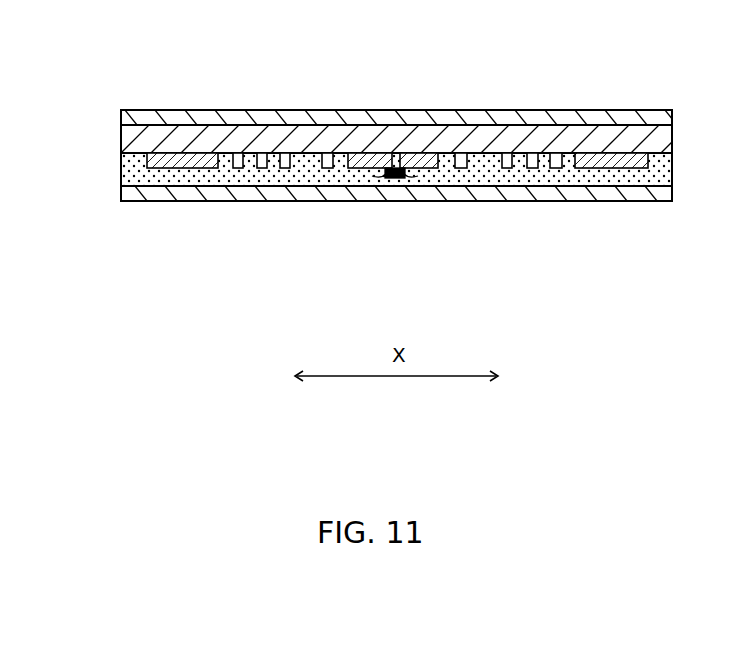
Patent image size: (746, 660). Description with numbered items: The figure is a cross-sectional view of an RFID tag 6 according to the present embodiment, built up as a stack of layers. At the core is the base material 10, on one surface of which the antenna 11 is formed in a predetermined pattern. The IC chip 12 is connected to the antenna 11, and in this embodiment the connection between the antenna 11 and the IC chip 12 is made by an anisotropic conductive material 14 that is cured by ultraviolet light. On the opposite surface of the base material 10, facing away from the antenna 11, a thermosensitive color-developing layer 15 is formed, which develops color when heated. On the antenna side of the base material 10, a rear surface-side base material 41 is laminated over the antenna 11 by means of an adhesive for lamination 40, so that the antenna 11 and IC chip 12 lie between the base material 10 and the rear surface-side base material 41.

The RFID tag 6 is at (352, 150).
The thermosensitive color-developing layer 15 is at (121, 118).
The base material 10 is at (128, 146).
The antenna 11 is at (127, 162).
The adhesive for lamination 40 is at (128, 185).
The rear surface-side base material 41 is at (128, 198).
The anisotropic conductive material 14 is at (385, 176).
The IC chip 12 is at (399, 178).